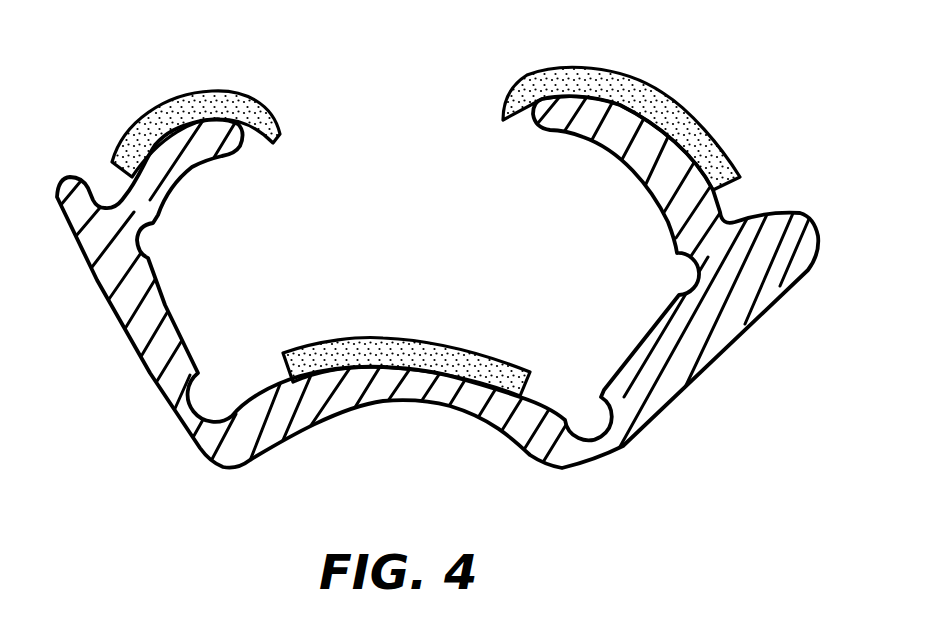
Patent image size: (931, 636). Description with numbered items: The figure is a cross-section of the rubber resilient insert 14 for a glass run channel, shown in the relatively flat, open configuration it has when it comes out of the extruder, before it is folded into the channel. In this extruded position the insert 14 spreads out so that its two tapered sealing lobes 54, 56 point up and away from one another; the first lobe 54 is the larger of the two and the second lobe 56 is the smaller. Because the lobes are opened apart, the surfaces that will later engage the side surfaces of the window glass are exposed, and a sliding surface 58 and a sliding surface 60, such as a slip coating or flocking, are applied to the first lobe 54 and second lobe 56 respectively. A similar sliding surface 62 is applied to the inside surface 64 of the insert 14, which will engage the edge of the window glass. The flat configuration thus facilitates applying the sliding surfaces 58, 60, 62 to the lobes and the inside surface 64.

The resilient insert 14 is at (726, 355).
The first sealing lobe 54 is at (618, 139).
The second sealing lobe 56 is at (191, 156).
The sliding surface 58 is at (620, 78).
The sliding surface 60 is at (236, 66).
The sliding surface 62 is at (460, 352).
The inside surface 64 is at (428, 395).